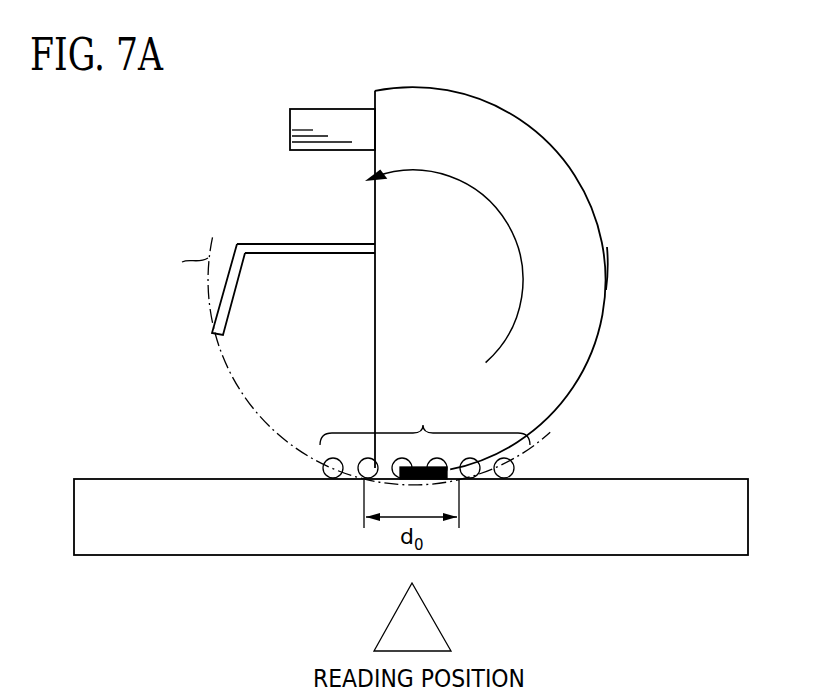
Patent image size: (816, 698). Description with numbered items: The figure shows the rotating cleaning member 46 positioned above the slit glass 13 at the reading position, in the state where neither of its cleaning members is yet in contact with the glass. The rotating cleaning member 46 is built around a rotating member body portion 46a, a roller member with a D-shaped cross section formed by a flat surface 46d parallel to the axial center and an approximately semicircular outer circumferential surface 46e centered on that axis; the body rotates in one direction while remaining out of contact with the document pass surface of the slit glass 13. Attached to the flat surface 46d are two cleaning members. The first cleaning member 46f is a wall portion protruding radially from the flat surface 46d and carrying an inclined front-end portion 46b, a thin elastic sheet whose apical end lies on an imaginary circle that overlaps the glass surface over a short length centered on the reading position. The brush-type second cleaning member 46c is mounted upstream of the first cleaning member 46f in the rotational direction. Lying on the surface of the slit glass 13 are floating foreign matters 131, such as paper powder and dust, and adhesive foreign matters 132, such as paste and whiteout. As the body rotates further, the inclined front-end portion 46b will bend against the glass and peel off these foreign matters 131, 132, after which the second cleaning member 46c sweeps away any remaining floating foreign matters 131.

The rotating cleaning member 46 is at (413, 249).
The rotating member body portion 46a is at (532, 147).
The inclined front-end portion 46b is at (222, 306).
The second cleaning member 46c is at (335, 109).
The flat surface 46d is at (374, 346).
The outer circumferential surface 46e is at (607, 247).
The first cleaning member 46f is at (306, 224).
The slit glass 13 is at (188, 543).
The floating foreign matters 131 is at (425, 440).
The adhesive foreign matters 132 is at (422, 479).